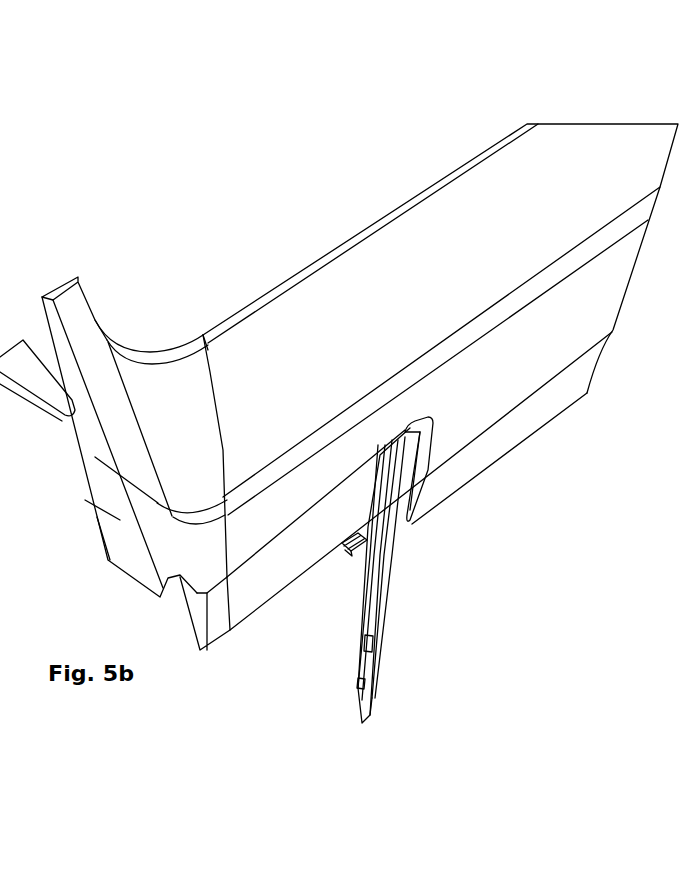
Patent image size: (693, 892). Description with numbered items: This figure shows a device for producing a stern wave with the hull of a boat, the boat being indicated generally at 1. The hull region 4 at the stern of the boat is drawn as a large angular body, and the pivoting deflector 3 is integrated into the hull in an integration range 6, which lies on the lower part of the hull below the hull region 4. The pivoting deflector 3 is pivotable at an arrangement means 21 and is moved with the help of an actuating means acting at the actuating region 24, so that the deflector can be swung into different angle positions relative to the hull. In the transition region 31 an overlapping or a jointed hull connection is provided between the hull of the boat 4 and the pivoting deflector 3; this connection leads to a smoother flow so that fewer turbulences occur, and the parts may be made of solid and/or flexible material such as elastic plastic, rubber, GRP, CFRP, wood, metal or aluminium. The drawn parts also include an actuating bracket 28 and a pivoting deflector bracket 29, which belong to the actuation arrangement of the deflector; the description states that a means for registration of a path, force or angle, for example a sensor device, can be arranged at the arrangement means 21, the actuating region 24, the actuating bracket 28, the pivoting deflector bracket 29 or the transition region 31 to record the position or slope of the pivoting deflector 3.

The drawer / container 1 is at (330, 157).
The pivoting deflector 3 is at (428, 614).
The hull region 4 is at (528, 370).
The integration range 6 is at (304, 563).
The arrangement means 21 is at (397, 508).
The actuating region 24 is at (358, 546).
The actuating bracket 28 is at (356, 549).
The pivoting deflector bracket 29 is at (383, 642).
The transition region 31 is at (450, 440).